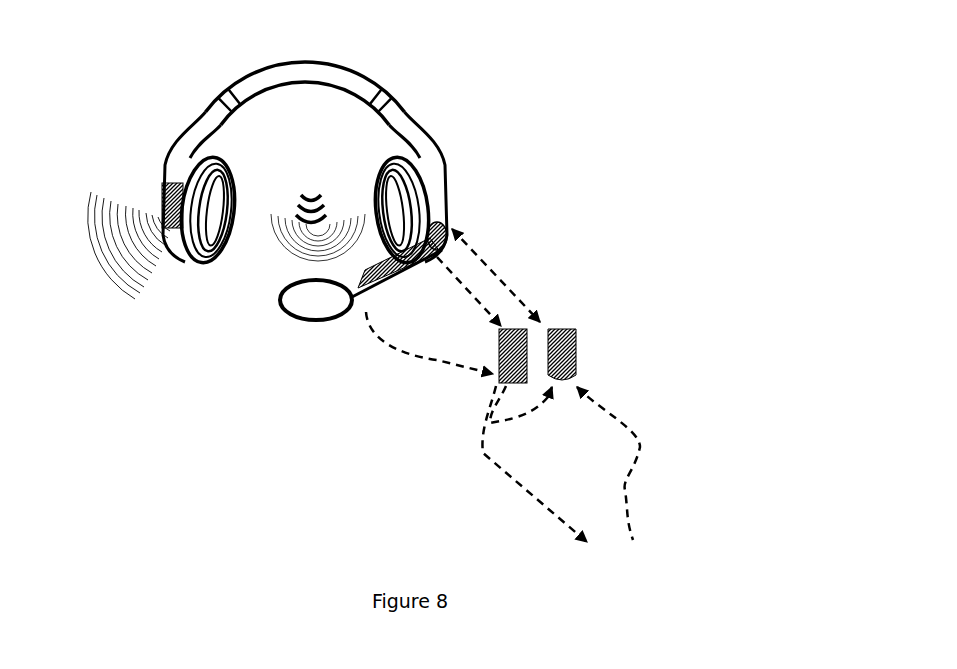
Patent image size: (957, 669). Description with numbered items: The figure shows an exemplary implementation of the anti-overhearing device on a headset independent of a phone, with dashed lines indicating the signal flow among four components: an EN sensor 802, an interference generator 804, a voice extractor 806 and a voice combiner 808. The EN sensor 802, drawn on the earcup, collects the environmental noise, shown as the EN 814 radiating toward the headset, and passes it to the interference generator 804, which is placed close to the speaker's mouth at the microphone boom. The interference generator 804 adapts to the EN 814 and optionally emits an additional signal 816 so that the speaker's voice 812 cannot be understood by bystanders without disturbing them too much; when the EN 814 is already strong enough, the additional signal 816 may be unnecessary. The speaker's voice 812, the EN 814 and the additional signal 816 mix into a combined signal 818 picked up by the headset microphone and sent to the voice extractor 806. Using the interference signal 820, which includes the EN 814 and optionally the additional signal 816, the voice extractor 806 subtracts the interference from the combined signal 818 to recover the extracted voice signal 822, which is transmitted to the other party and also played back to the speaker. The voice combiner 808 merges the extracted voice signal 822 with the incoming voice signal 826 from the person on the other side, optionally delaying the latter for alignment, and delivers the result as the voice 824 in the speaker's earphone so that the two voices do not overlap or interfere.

The EN sensor 802 is at (157, 220).
The interference generator 804 is at (347, 292).
The voice extractor 806 is at (527, 332).
The voice combiner 808 is at (573, 332).
The speaker's voice 812 is at (281, 188).
The EN 814 is at (120, 270).
The additional signal 816 is at (326, 194).
The combined signal 818 is at (429, 330).
The interference signal 820 is at (452, 389).
The extracted voice signal 822 is at (464, 464).
The voice in the earphone 824 is at (503, 273).
The incoming voice signal 826 is at (662, 463).